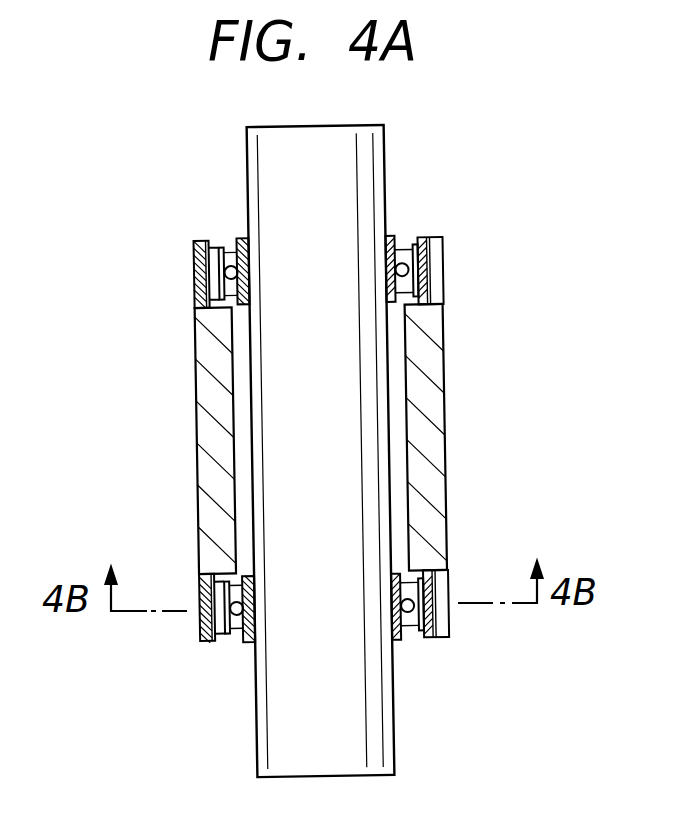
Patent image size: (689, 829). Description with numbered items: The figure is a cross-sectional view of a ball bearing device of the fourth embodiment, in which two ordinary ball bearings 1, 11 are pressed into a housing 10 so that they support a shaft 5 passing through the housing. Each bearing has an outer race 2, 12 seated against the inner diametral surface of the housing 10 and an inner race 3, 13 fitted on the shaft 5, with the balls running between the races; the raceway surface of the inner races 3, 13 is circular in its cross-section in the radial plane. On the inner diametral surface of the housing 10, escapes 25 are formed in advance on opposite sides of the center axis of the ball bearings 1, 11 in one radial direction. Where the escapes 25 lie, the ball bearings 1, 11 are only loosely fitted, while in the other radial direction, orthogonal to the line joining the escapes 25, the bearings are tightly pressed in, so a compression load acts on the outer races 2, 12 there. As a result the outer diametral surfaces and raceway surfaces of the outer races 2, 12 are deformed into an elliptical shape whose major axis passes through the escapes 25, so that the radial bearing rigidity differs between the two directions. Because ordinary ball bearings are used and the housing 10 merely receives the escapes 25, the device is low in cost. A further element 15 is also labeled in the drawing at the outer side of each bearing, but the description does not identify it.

The ball bearing 1 is at (228, 237).
The outer race 2 is at (420, 278).
The inner race 3 is at (385, 237).
The shaft 5 is at (318, 134).
The housing 10 is at (203, 382).
The ball bearing 11 is at (230, 647).
The outer race 12 is at (428, 620).
The inner race 13 is at (403, 613).
The retaining ring 15 is at (408, 265).
The escape 25 is at (210, 623).